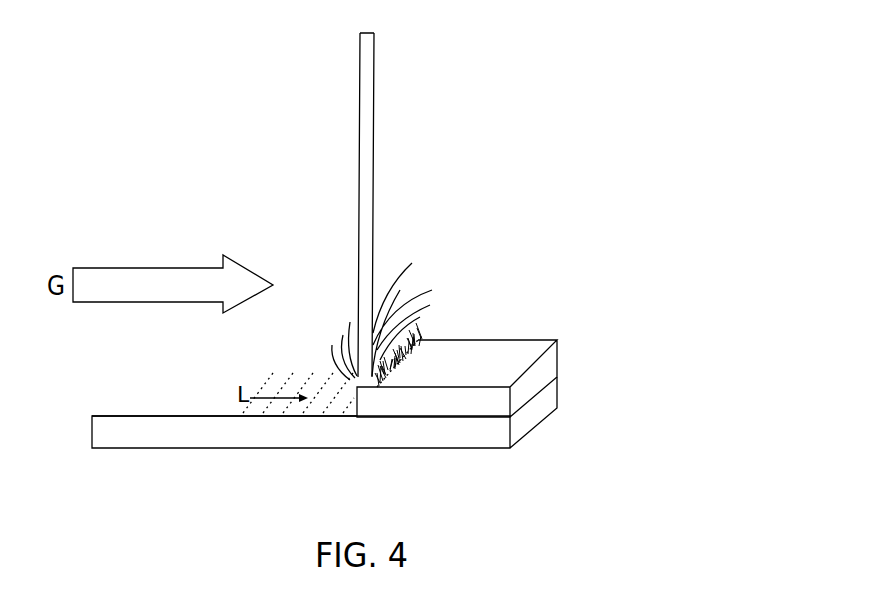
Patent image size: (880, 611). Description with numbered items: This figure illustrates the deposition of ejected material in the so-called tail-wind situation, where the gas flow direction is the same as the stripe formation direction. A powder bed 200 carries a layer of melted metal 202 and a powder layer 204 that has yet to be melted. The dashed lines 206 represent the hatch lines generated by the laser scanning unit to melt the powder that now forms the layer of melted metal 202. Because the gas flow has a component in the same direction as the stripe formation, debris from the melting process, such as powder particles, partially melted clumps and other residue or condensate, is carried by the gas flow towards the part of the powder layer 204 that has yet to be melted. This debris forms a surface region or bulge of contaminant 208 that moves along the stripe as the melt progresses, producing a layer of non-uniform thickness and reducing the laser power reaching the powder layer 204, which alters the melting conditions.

The powder bed 200 is at (327, 437).
The layer of melted metal 202 is at (197, 393).
The powder layer 204 is at (493, 355).
The hatch lines 206 is at (298, 375).
The bulge of contaminant 208 is at (430, 326).